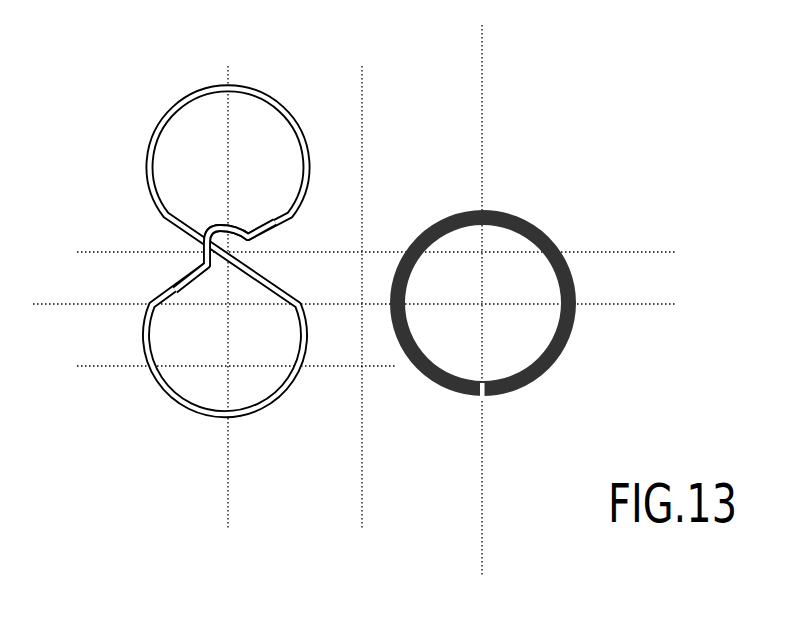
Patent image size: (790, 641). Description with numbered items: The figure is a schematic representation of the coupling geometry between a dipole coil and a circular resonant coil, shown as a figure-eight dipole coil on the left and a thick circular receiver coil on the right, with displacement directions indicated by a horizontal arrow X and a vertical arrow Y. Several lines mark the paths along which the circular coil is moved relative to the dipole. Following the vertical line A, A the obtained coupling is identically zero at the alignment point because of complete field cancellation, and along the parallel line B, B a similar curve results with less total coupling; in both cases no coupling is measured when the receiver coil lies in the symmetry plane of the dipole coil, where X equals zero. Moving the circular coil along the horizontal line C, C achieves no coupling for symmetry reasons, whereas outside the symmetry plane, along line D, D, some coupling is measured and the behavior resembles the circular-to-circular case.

The line A- A is at (228, 265).
The line B- B is at (362, 265).
The line C- C is at (200, 252).
The line D- D is at (206, 365).
The X direction X is at (355, 550).
The Y direction Y is at (627, 278).